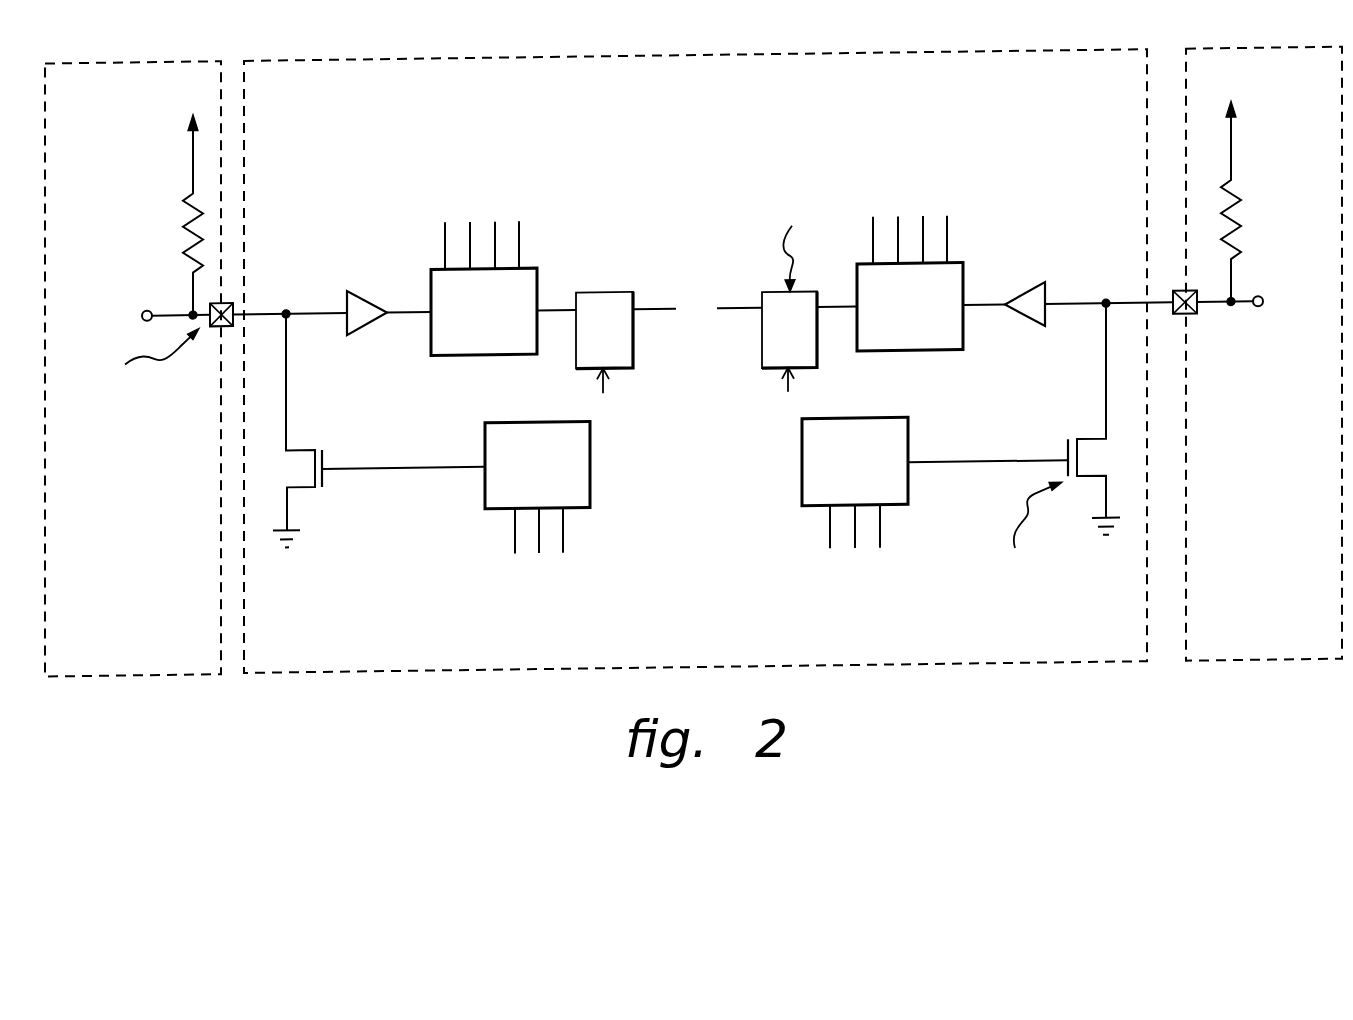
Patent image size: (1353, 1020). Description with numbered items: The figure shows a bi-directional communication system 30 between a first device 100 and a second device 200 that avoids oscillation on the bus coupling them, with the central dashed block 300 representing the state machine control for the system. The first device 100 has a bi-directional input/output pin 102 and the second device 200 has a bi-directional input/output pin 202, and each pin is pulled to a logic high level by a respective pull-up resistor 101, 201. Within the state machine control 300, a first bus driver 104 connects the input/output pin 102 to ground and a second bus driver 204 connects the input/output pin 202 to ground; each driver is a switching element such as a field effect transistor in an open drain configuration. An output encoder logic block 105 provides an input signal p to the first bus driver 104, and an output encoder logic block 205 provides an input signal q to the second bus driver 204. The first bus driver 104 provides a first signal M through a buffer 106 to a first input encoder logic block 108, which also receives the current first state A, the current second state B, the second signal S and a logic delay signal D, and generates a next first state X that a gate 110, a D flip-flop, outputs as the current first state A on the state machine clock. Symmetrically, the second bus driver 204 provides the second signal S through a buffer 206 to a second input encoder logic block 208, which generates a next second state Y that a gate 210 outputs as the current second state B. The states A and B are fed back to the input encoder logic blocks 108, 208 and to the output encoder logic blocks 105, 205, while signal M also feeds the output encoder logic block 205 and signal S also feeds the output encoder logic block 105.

The bi-directional communication system 30 is at (731, 24).
The first device 100 is at (152, 496).
The pull-up resistor 101 is at (188, 272).
The input/output pin 102 is at (215, 322).
The first bus driver 104 is at (305, 483).
The first output encoder logic block 105 is at (578, 507).
The buffer 106 is at (377, 325).
The first input encoder logic block 108 is at (466, 353).
The gate 110 is at (597, 289).
The second device 200 is at (1287, 496).
The pull-up resistor 201 is at (1240, 243).
The input/output pin 202 is at (1198, 322).
The second bus driver 204 is at (1095, 440).
The second output encoder logic block 205 is at (815, 508).
The buffer 206 is at (1030, 326).
The second input encoder logic block 208 is at (890, 354).
The gate 210 is at (762, 338).
The state machine control 300 is at (707, 645).